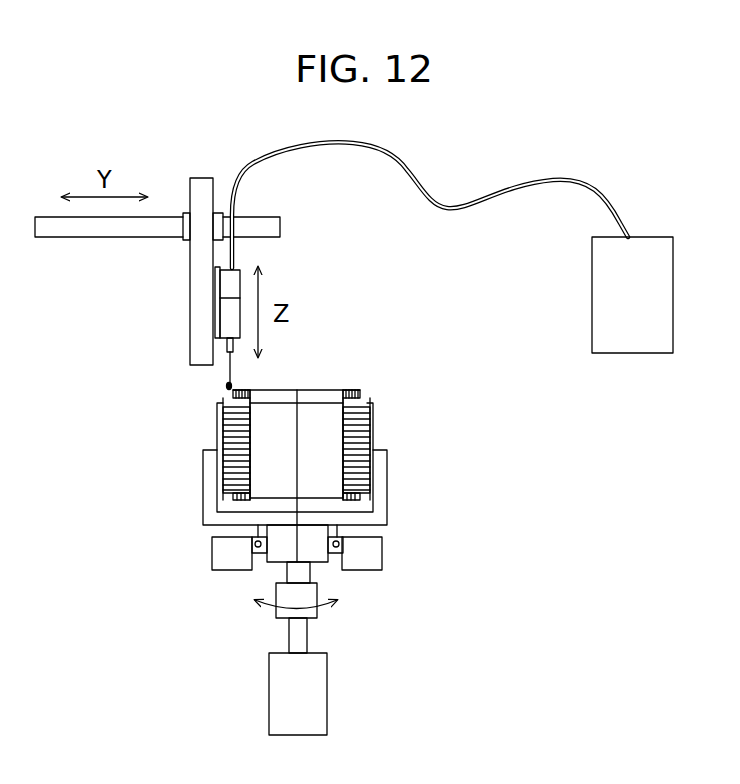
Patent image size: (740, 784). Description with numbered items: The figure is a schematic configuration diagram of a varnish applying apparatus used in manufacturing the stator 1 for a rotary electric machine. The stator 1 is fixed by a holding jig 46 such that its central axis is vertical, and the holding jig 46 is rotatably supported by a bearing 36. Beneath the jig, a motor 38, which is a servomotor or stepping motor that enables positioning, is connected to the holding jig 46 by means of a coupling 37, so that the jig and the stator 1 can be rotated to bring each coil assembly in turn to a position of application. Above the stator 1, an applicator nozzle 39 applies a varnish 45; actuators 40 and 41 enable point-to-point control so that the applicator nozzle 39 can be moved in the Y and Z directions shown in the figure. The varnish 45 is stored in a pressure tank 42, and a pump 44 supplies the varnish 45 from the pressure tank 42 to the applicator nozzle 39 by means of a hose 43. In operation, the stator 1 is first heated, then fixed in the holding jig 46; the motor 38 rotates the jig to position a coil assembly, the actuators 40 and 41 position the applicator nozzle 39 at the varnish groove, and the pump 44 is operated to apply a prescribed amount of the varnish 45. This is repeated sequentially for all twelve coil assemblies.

The stator 1 is at (343, 370).
The bearing 36 is at (343, 547).
The coupling 37 is at (272, 617).
The motor 38 is at (323, 698).
The applicator nozzle 39 is at (223, 371).
The actuator 40 is at (95, 238).
The actuator 41 is at (187, 313).
The pressure tank 42 is at (592, 293).
The hose 43 is at (447, 213).
The pump 44 is at (243, 267).
The varnish 45 is at (225, 387).
The holding jig 46 is at (388, 472).